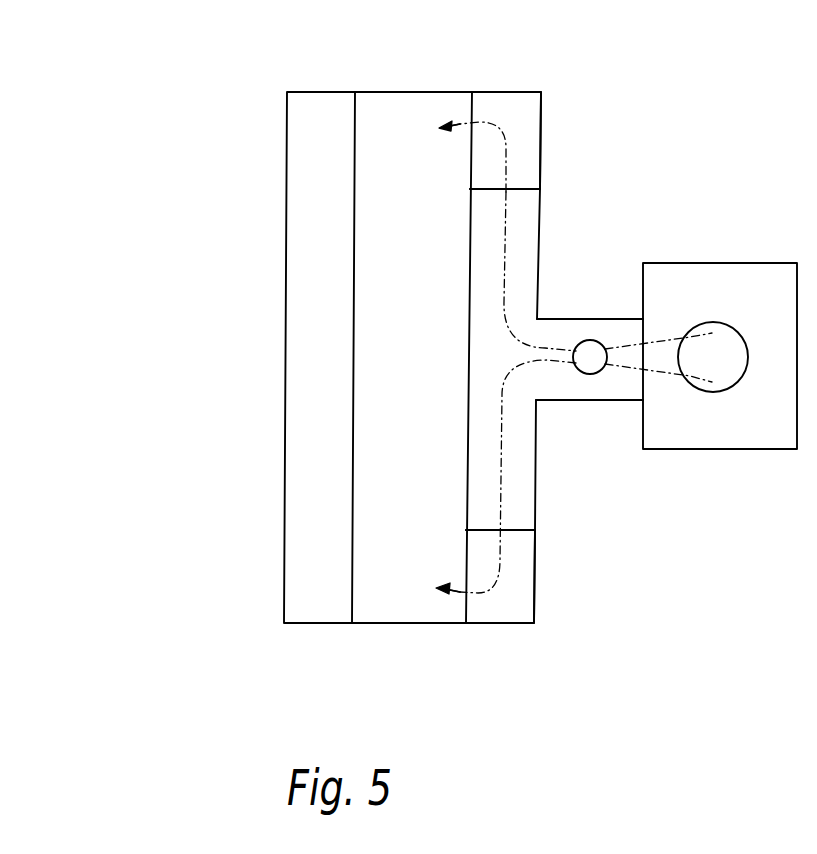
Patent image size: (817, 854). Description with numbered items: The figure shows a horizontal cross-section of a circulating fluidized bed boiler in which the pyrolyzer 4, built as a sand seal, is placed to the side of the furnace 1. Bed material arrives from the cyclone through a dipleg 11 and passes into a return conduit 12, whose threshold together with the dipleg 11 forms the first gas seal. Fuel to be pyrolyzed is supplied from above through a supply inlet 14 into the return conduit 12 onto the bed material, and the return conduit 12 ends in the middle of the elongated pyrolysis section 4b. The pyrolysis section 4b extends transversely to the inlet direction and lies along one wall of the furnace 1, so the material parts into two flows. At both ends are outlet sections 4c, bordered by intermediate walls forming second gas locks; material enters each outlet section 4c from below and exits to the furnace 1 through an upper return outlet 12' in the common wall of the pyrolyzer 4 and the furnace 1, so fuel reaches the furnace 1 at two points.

The furnace 1 is at (393, 127).
The pyrolyzer 4 is at (490, 350).
The pyrolysis section 4b is at (520, 452).
The outlet section 4c is at (517, 110).
The dipleg 11 is at (718, 323).
The return conduit 12 is at (589, 321).
The upper return outlet 12' is at (449, 366).
The supply inlet 14 is at (594, 358).